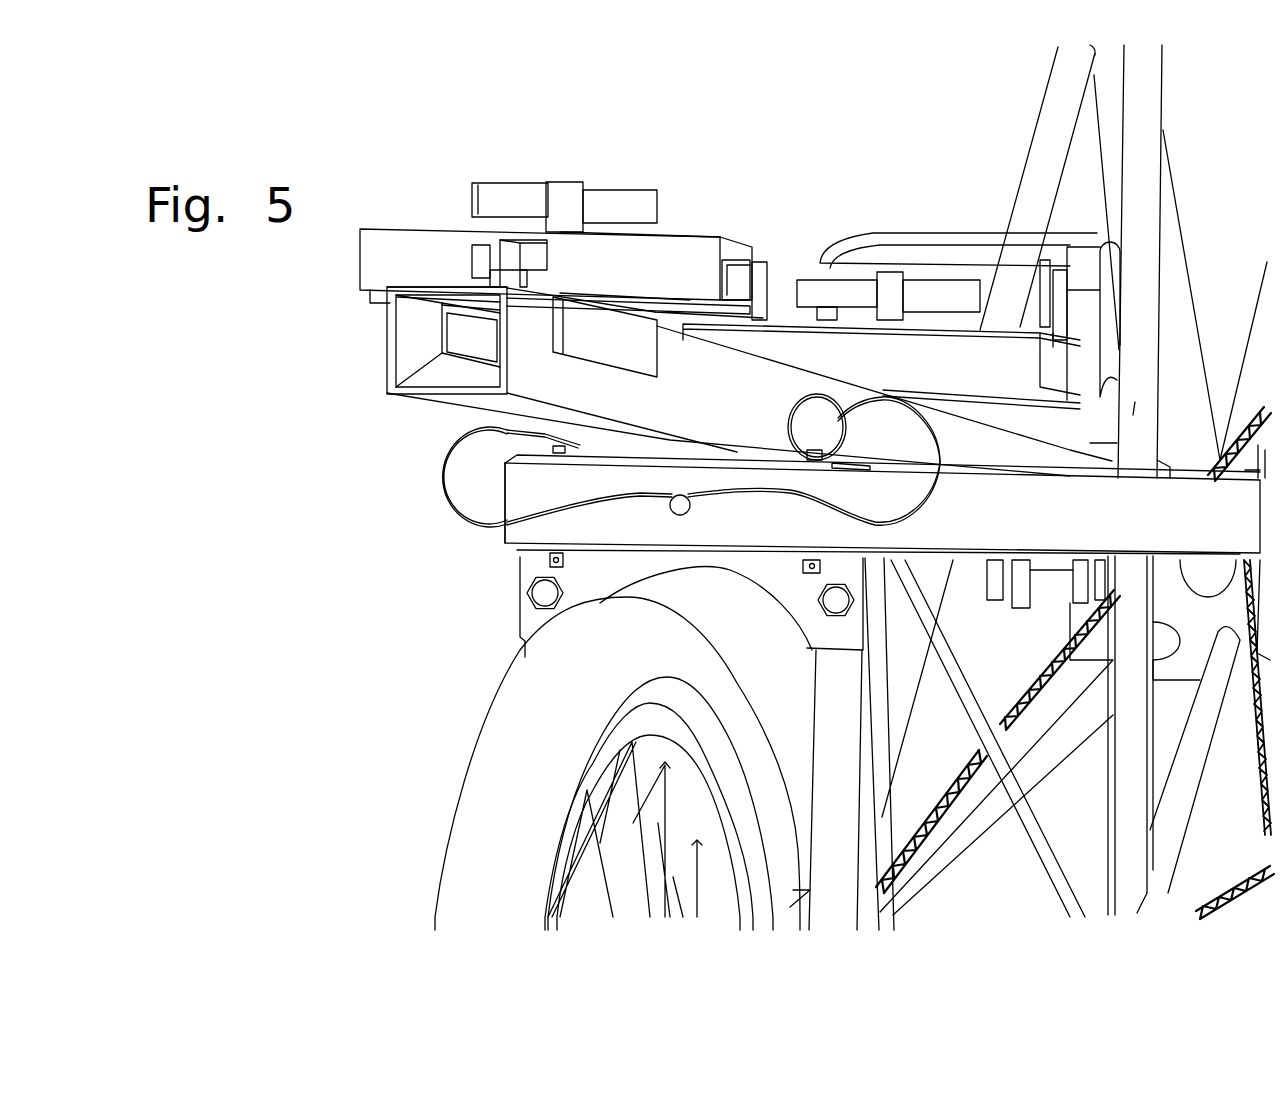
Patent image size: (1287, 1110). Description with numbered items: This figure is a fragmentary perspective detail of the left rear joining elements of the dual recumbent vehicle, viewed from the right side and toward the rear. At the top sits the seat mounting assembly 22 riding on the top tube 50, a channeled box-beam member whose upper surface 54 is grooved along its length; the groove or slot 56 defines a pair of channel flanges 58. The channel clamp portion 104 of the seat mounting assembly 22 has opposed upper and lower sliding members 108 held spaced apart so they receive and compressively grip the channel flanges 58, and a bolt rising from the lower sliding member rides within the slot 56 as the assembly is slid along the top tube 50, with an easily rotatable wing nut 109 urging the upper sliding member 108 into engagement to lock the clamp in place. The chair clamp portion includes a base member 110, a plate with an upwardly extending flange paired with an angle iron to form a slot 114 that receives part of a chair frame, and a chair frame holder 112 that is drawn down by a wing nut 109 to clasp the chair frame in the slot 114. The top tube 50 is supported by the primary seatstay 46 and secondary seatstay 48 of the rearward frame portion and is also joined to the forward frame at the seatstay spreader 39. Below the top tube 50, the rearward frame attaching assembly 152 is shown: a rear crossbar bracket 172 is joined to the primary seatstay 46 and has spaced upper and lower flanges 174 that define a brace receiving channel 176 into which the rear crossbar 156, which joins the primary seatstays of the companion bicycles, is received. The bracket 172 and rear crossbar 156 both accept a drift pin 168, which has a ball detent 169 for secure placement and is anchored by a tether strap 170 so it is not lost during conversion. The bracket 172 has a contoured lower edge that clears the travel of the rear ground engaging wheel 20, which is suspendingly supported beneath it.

The rear ground engaging wheel 20 is at (450, 843).
The seat mounting assembly 22 is at (678, 212).
The seatstay spreader 39 is at (1112, 417).
The primary seatstay 46 is at (871, 744).
The secondary seatstay 48 is at (970, 660).
The top tube 50 is at (761, 354).
The upper surface 54 is at (400, 287).
The groove or slot 56 is at (438, 287).
The channel flanges 58 is at (413, 285).
The channel clamp portion 104 is at (442, 337).
The sliding members 108 is at (582, 332).
The wing nut 109 is at (525, 183).
The base member 110 is at (768, 262).
The chair frame holder 112 is at (358, 268).
The slot 114 is at (761, 252).
The rearward frame attaching assembly 152 is at (437, 548).
The rear crossbar 156 is at (882, 499).
The drift pin 168 is at (822, 394).
The ball detent 169 is at (547, 563).
The tether strap 170 is at (925, 408).
The rear crossbar bracket 172 is at (518, 633).
The upper and lower flanges 174 is at (503, 550).
The brace receiving channel 176 is at (500, 452).